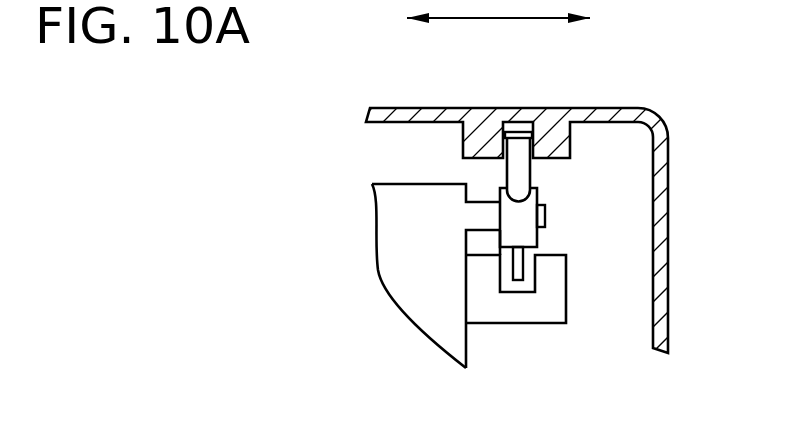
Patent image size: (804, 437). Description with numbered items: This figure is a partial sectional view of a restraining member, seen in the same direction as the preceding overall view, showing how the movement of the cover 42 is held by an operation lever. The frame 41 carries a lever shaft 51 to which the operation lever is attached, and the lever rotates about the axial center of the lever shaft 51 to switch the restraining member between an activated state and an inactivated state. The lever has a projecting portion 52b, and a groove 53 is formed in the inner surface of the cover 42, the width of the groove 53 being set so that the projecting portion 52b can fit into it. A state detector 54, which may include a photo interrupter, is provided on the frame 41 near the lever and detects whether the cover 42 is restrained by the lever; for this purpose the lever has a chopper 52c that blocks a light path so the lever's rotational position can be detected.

The frame 41 is at (448, 318).
The cover 42 is at (650, 120).
The lever shaft 51 is at (545, 217).
The projecting portion 52b is at (523, 172).
The chopper 52c is at (518, 272).
The groove 53 is at (517, 133).
The state detector 54 is at (545, 313).